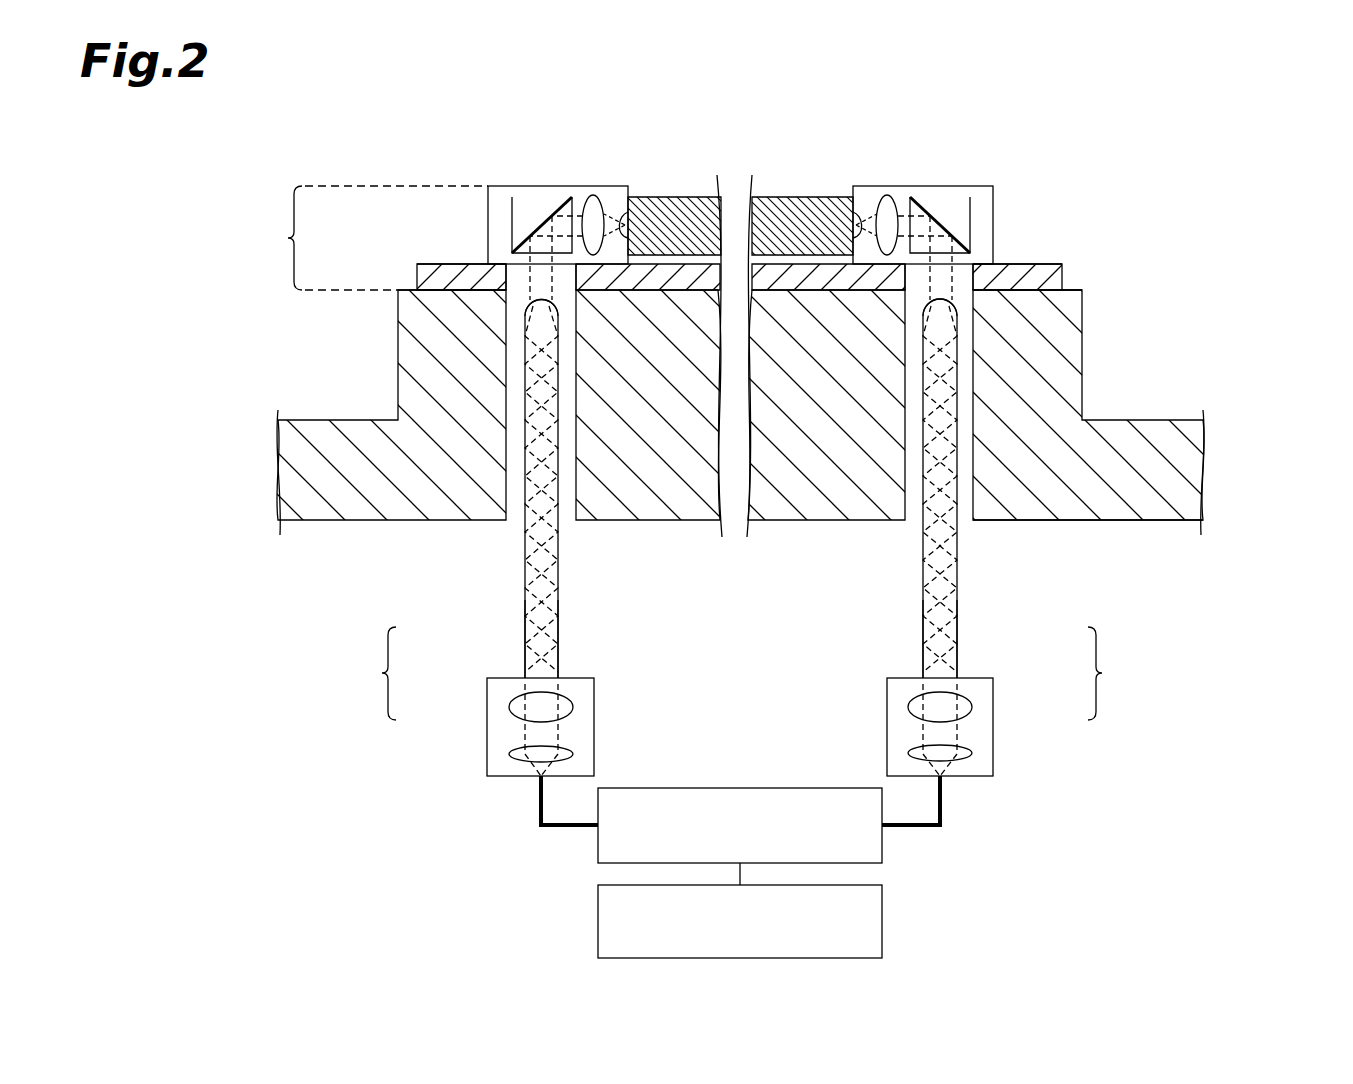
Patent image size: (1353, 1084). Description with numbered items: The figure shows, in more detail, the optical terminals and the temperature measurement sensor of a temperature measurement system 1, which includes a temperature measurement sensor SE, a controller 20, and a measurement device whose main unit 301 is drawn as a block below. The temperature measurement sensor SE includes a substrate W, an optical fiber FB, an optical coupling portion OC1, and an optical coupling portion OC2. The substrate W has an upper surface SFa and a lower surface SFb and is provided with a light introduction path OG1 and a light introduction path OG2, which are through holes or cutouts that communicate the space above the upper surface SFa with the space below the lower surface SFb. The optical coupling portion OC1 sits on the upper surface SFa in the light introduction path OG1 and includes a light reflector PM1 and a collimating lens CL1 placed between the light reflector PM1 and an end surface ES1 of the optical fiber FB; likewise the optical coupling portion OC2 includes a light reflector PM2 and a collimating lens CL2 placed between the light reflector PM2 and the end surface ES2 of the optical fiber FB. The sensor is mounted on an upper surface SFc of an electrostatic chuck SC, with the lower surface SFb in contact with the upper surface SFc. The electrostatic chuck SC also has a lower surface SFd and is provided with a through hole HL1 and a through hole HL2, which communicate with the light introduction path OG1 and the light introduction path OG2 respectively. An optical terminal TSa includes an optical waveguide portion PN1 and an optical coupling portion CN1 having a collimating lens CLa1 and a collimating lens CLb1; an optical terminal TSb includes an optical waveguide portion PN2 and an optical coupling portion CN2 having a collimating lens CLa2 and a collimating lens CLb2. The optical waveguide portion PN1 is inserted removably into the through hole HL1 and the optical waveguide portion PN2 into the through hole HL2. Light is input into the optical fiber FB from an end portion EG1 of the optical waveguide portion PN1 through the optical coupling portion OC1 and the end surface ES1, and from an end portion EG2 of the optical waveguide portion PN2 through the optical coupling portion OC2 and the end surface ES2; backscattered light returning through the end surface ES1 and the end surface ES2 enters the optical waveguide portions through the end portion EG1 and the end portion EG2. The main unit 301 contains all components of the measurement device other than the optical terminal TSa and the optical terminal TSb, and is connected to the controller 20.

The temperature measurement system 1 is at (1280, 173).
The electrostatic chuck SC is at (1068, 380).
The substrate W is at (422, 273).
The upper surface SFa is at (450, 264).
The lower surface SFb is at (447, 290).
The upper surface SFc is at (1072, 282).
The lower surface SFd is at (1123, 520).
The temperature measurement sensor SE is at (366, 238).
The optical fiber FB is at (685, 210).
The optical coupling portion OC1 is at (513, 186).
The optical coupling portion OC2 is at (968, 186).
The light reflector PM1 is at (555, 207).
The light reflector PM2 is at (927, 210).
The collimating lens CL1 is at (594, 195).
The collimating lens CL2 is at (887, 195).
The end surface ES1 is at (620, 224).
The end surface ES2 is at (860, 224).
The light introduction path OG1 is at (518, 280).
The light introduction path OG2 is at (963, 280).
The through hole HL1 is at (515, 525).
The through hole HL2 is at (966, 525).
The end portion EG1 is at (533, 311).
The end portion EG2 is at (943, 311).
The optical terminal TSa is at (501, 688).
The optical terminal TSb is at (977, 688).
The optical waveguide portion PN1 is at (523, 643).
The optical waveguide portion PN2 is at (958, 643).
The optical coupling portion CN1 is at (487, 705).
The optical coupling portion CN2 is at (993, 705).
The collimating lens CLb1 is at (575, 707).
The collimating lens CLa1 is at (575, 754).
The collimating lens CLb2 is at (908, 707).
The collimating lens CLa2 is at (908, 753).
The main unit 301 is at (735, 788).
The controller 20 is at (882, 912).